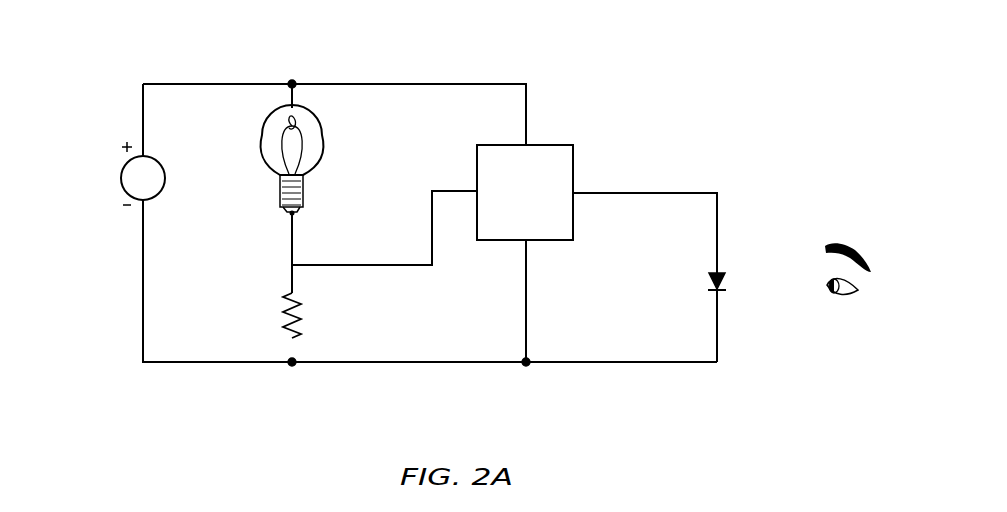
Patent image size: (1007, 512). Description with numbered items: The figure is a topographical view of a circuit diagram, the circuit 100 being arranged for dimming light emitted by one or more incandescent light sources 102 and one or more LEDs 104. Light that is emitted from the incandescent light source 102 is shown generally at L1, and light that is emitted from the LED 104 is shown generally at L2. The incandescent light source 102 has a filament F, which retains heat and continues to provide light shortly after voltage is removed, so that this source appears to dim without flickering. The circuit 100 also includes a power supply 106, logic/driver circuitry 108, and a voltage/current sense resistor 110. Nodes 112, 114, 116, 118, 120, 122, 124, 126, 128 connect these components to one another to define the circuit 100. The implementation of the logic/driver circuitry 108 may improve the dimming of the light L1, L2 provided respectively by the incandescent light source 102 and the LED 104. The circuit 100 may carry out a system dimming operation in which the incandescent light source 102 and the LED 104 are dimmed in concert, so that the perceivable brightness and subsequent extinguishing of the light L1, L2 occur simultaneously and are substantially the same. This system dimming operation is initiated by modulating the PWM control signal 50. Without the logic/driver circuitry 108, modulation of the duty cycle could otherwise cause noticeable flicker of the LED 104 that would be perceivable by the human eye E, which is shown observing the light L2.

The circuit 100 is at (707, 11).
The incandescent light source 102 is at (318, 177).
The LED 104 is at (733, 259).
The power supply 106 is at (162, 167).
The logic/driver circuitry 108 is at (556, 145).
The voltage/current sense resistor 110 is at (318, 315).
The node 112 is at (161, 84).
The node 114 is at (297, 97).
The node 116 is at (485, 84).
The node 118 is at (681, 192).
The node 120 is at (526, 303).
The node 122 is at (621, 364).
The node 124 is at (240, 364).
The node 126 is at (417, 263).
The node 128 is at (428, 364).
The PWM control signal 50 is at (108, 178).
The filament F is at (307, 150).
The light emitted from the incandescent light source L1 is at (280, 102).
The light emitted from the LED L2 is at (747, 290).
The human eye E is at (855, 222).